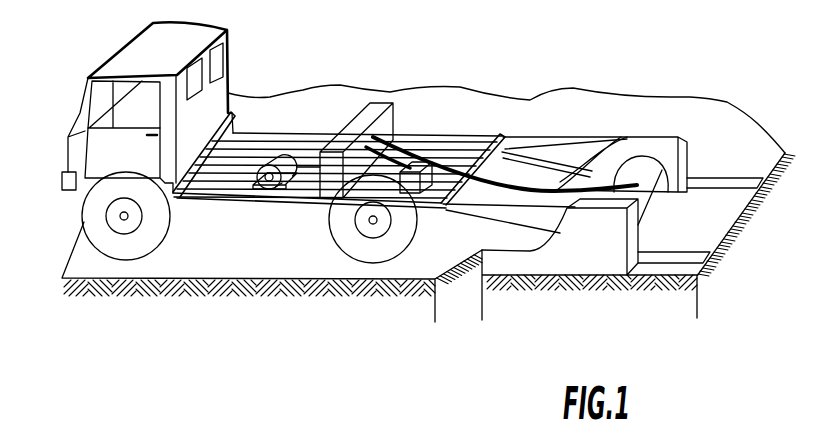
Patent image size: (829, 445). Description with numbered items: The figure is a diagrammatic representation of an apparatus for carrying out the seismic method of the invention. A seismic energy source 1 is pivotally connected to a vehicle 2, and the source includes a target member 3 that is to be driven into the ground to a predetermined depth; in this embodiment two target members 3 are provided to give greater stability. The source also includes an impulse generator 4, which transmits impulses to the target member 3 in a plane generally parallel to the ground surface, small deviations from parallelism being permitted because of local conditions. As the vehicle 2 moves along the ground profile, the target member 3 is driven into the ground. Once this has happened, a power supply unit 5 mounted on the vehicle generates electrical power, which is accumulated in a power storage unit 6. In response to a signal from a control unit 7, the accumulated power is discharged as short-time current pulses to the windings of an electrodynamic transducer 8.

The seismic energy source 1 is at (708, 110).
The vehicle 2 is at (200, 33).
The target member 3 is at (664, 138).
The impulse generator 4 is at (662, 205).
The power supply unit 5 is at (280, 157).
The power storage unit 6 is at (379, 108).
The control unit 7 is at (413, 184).
The electrodynamic transducer 8 is at (657, 170).